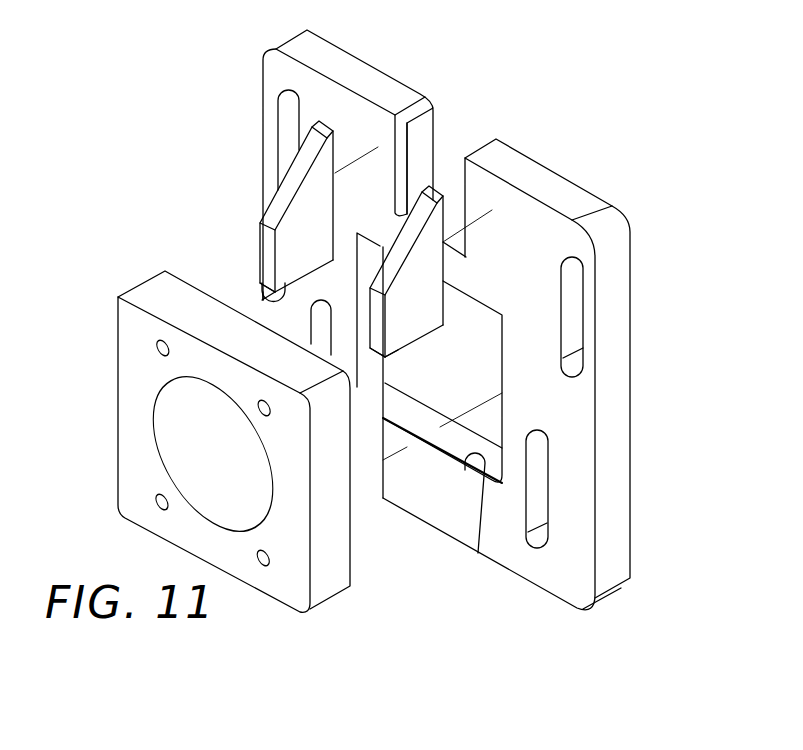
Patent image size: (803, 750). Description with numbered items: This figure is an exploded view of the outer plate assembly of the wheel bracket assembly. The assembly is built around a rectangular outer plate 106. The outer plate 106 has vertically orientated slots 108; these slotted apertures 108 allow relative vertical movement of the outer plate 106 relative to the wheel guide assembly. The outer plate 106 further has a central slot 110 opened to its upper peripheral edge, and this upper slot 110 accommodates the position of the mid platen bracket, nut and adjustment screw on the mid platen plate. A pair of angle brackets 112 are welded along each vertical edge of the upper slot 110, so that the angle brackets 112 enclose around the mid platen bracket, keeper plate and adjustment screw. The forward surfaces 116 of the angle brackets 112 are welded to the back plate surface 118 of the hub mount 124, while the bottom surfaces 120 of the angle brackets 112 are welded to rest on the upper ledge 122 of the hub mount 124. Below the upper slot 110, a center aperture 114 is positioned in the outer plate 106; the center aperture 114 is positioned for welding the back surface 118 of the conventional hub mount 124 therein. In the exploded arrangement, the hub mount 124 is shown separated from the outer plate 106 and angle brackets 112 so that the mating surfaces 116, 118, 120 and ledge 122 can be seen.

The outer plate 106 is at (263, 92).
The vertically orientated slots 108 is at (577, 331).
The central slot 110 is at (425, 133).
The angle brackets 112 is at (276, 172).
The center aperture 114 is at (481, 528).
The forward surfaces 116 is at (260, 234).
The back plate surface 118 is at (192, 280).
The bottom surfaces 120 is at (262, 300).
The upper ledge 122 is at (385, 385).
The hub mount 124 is at (115, 378).